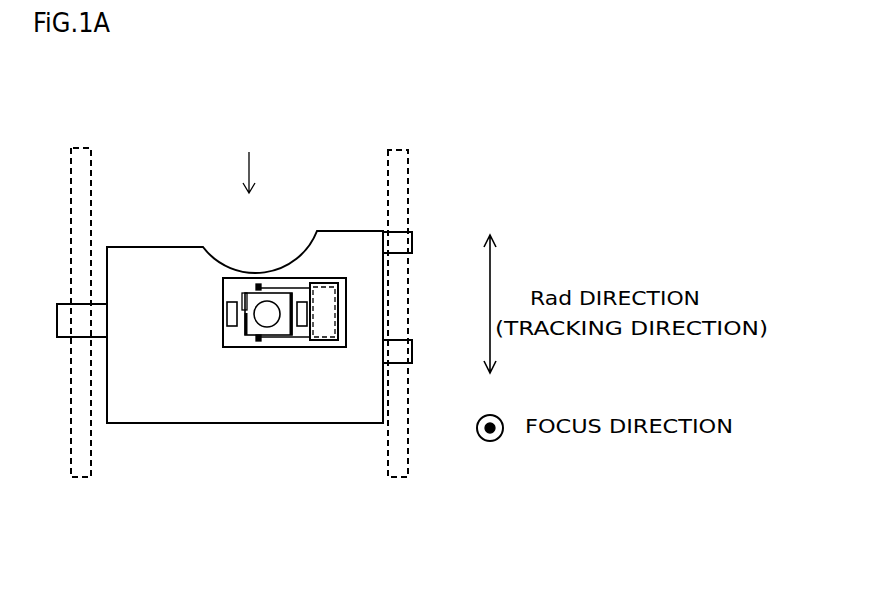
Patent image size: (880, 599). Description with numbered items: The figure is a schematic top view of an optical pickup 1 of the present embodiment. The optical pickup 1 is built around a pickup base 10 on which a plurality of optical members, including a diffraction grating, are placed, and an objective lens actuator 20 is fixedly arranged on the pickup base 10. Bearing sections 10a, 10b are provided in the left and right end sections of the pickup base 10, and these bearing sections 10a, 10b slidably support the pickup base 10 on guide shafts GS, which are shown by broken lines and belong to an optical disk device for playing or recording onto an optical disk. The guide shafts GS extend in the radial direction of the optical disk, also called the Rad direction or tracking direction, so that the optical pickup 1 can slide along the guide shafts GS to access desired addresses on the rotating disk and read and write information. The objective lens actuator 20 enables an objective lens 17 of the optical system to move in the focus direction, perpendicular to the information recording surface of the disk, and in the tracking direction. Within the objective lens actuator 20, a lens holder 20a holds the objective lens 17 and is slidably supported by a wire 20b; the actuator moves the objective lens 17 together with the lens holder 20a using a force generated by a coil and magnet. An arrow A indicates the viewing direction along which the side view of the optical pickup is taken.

The optical pickup 1 is at (336, 210).
The pickup base 10 is at (145, 247).
The bearing section 10a is at (62, 313).
The bearing section 10b is at (406, 246).
The objective lens 17 is at (260, 318).
The objective lens actuator 20 is at (222, 351).
The lens holder 20a is at (252, 305).
The wire 20b is at (298, 288).
The guide shafts GS is at (79, 158).
The arrow A is at (249, 160).